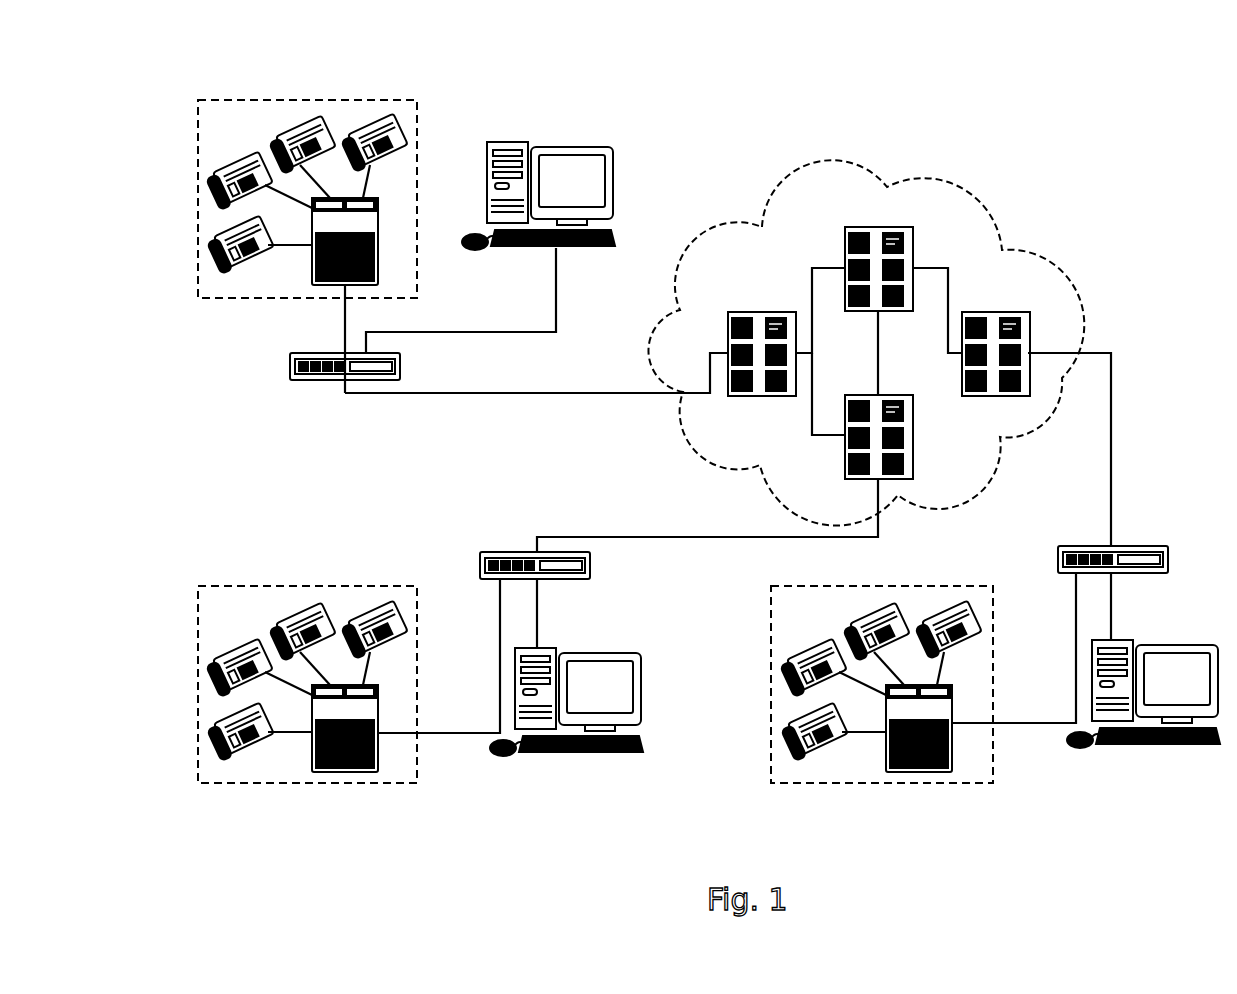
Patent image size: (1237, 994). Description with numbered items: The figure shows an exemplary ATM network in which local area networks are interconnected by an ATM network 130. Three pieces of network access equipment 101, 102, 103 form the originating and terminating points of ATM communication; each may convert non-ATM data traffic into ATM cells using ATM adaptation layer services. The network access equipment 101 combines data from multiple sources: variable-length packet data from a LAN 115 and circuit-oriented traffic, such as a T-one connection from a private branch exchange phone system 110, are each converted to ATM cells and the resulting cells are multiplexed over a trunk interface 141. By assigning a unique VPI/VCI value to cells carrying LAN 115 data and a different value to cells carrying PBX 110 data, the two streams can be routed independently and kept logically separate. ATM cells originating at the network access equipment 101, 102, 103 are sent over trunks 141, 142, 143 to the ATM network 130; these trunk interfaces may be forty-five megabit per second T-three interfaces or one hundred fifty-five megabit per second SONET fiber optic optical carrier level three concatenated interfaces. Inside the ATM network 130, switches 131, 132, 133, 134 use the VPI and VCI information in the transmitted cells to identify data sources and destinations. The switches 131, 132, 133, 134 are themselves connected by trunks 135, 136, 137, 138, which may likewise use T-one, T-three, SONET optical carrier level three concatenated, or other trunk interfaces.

The private branch exchange phone system 110 is at (297, 90).
The local area network 115 is at (567, 147).
The network access equipment 101 is at (308, 353).
The network access equipment 102 is at (507, 552).
The network access equipment 103 is at (1140, 546).
The ATM network 130 is at (788, 172).
The switch 131 is at (762, 312).
The switch 132 is at (912, 432).
The switch 133 is at (990, 312).
The switch 134 is at (878, 227).
The trunk 135 is at (826, 268).
The trunk 136 is at (826, 435).
The trunk 137 is at (880, 385).
The trunk 138 is at (930, 268).
The trunk interface 141 is at (566, 393).
The trunk interface 142 is at (732, 537).
The trunk interface 143 is at (1113, 400).